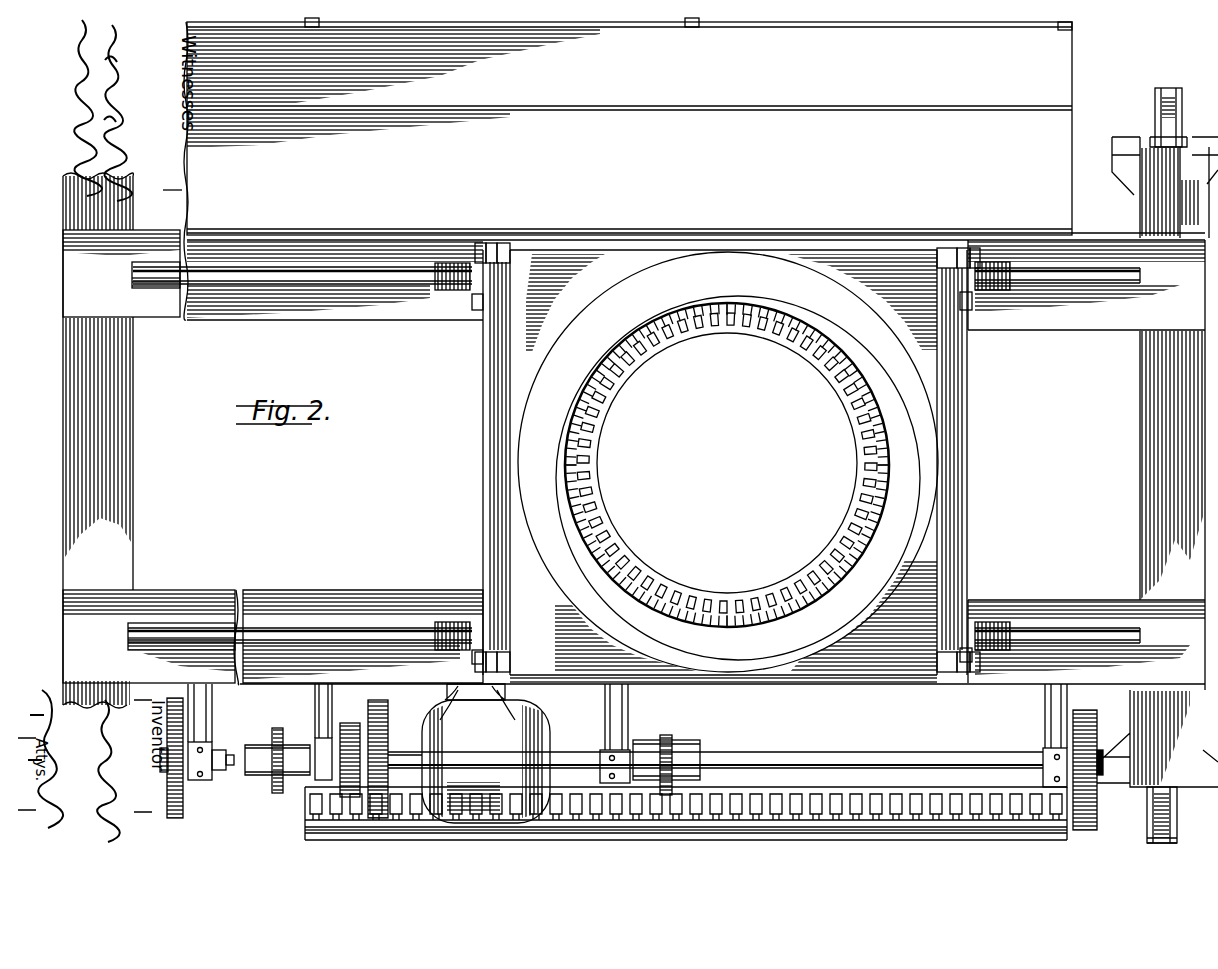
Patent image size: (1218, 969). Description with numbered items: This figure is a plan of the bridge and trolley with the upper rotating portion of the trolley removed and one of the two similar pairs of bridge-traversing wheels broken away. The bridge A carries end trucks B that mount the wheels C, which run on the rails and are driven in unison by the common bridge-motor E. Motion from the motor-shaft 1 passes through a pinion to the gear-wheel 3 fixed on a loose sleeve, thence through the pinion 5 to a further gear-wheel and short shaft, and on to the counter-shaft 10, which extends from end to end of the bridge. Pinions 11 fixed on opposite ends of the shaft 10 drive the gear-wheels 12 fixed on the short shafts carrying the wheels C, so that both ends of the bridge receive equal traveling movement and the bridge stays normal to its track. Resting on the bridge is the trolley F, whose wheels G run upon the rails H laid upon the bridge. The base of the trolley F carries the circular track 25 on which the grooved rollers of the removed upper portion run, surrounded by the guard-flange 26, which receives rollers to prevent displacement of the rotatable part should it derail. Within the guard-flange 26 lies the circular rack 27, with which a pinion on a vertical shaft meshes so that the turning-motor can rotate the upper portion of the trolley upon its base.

The motor-shaft 1 is at (418, 762).
The gear-wheel 3 is at (388, 704).
The pinion 5 is at (345, 724).
The counter-shaft 10 is at (246, 756).
The pinion 11 is at (183, 772).
The gear-wheel 12 is at (183, 815).
The circular track 25 is at (773, 266).
The guard-flange 26 is at (783, 323).
The circular rack 27 is at (683, 320).
The bridge A is at (403, 320).
The end truck B is at (134, 452).
The wheel C is at (1165, 95).
The bridge-motor E is at (486, 753).
The trolley F is at (727, 463).
The wheel G is at (465, 292).
The rail H is at (317, 273).